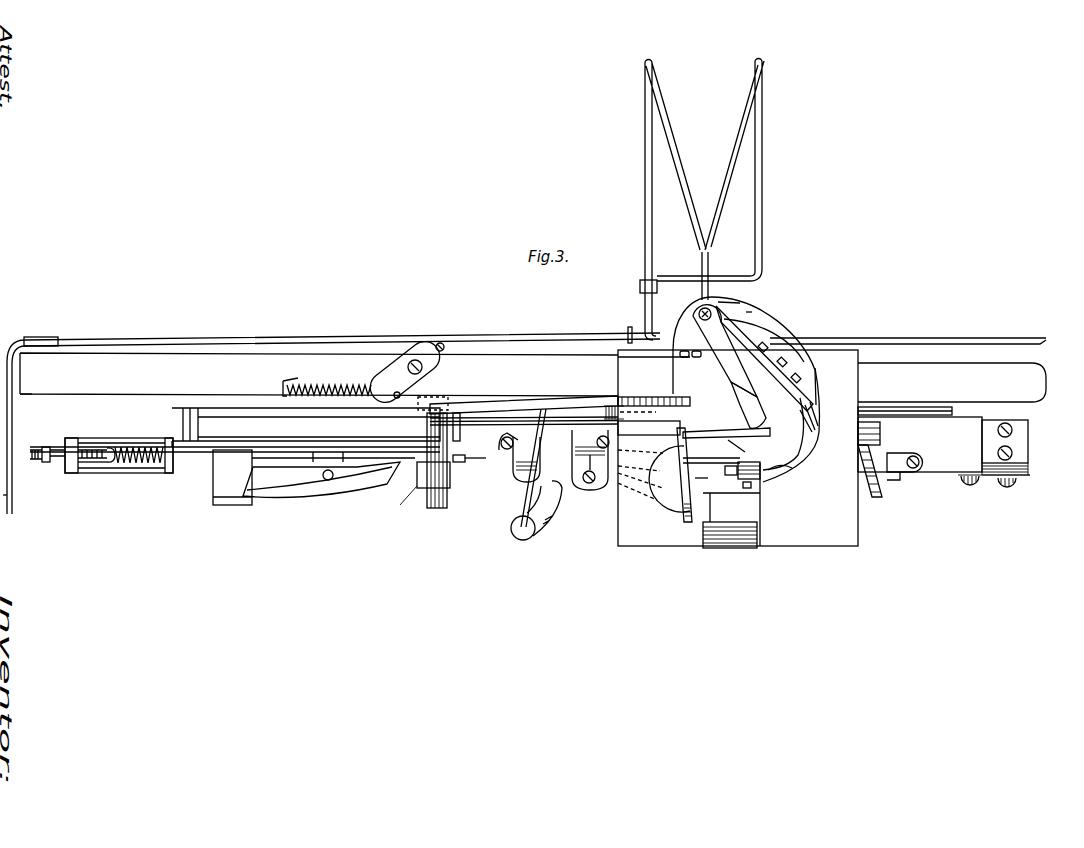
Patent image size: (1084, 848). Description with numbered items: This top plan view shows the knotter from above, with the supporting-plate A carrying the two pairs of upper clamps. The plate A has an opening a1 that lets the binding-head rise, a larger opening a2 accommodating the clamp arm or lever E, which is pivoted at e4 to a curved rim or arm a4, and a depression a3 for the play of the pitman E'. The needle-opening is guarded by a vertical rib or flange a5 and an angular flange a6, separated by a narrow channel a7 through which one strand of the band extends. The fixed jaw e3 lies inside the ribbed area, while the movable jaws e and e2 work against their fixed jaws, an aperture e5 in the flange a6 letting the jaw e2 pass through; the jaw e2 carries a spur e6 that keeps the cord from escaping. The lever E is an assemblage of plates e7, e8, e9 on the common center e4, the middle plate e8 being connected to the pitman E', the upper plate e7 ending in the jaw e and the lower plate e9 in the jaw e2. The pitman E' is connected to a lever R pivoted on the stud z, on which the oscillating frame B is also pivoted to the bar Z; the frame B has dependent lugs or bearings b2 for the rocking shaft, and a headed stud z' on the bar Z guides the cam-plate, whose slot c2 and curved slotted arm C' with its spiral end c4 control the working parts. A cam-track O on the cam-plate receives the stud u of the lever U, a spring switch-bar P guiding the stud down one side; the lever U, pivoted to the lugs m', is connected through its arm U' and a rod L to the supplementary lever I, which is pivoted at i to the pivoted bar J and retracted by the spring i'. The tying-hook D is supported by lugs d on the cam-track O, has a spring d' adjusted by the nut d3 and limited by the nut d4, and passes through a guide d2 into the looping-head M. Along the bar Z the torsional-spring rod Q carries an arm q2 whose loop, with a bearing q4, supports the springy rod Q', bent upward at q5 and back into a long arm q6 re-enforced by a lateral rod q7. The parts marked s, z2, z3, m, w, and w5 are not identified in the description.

The upward bend q5 is at (675, 197).
The long arm q6 is at (702, 176).
The lateral re-enforcing rod q7 is at (715, 274).
The arm q2 is at (631, 327).
The bearing q4 is at (43, 332).
The springy rod Q' is at (333, 417).
The torsional-spring rod Q is at (908, 333).
The rod end s is at (4, 495).
The bar Z is at (319, 374).
The beam end z2 is at (29, 405).
The beam end z3 is at (958, 392).
The tying-hook D is at (235, 456).
The lugs d is at (119, 446).
The adjusting nut d3 is at (112, 449).
The limiting nut d4 is at (45, 446).
The spring d' is at (110, 479).
The cam-track O is at (295, 458).
The curved slotted arm C' is at (306, 421).
The spring switch-bar P is at (306, 477).
The retracting-spring i' is at (327, 381).
The pivoted plate or bar J is at (406, 373).
The pivot i is at (397, 394).
The headed bolt or stud z' is at (449, 348).
The pivot stud z is at (430, 472).
The lever R is at (428, 430).
The guide d2 is at (469, 448).
The supplementary lever I is at (560, 407).
The pitman E' is at (543, 413).
The rod L is at (522, 499).
The arm U' is at (547, 508).
The looping-head M is at (583, 457).
The screw m is at (556, 435).
The lugs m' is at (590, 460).
The lever U is at (628, 477).
The supporting-plate A is at (738, 448).
The opening a1 is at (730, 535).
The depression a3 is at (649, 425).
The stud u is at (744, 485).
The curved rim or arm a4 is at (751, 487).
The angular vertical rib or flange a6 is at (711, 457).
The channel a7 is at (726, 446).
The cam w is at (680, 514).
The clamp arm or lever E is at (725, 351).
The middle plate e8 is at (748, 405).
The larger opening a2 is at (744, 351).
The curved spiral slot end c4 is at (736, 299).
The vertical rib or flange a5 is at (757, 310).
The projecting spur e6 is at (764, 358).
The fixed jaw e3 is at (737, 413).
The lower plate e9 is at (791, 411).
The movable jaw e2 is at (782, 431).
The upper plate e7 is at (789, 409).
The movable jaw e is at (736, 443).
The pivot e4 is at (739, 485).
The aperture e5 is at (736, 458).
The pin w5 is at (702, 485).
The oscillating frame or plate B is at (920, 443).
The dependent lugs or bearings b2 is at (1003, 461).
The slot c2 is at (870, 459).